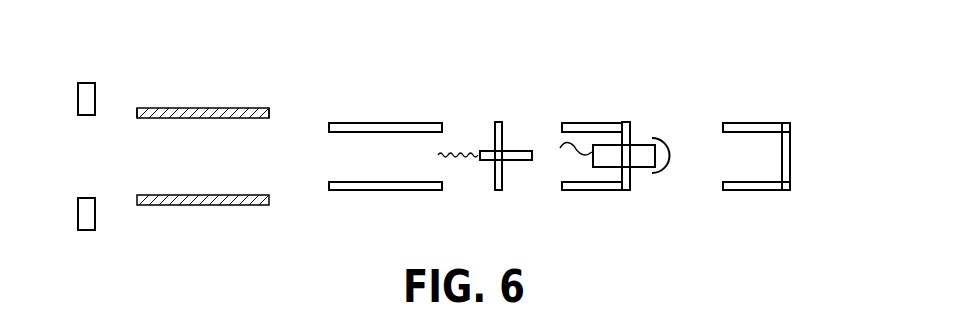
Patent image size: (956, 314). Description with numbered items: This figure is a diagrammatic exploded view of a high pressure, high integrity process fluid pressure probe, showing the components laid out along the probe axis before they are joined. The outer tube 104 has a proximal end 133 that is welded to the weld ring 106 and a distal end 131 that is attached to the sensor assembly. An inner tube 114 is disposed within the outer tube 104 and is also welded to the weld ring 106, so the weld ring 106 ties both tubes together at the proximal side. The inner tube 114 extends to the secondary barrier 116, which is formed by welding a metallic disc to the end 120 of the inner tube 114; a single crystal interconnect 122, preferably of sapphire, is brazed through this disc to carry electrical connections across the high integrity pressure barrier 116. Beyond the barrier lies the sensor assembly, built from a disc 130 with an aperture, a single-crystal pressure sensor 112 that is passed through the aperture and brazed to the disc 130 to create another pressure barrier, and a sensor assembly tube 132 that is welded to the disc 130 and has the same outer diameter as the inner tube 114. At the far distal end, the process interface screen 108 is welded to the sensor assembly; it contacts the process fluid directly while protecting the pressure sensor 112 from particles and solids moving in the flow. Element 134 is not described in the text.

The outer tube 104 is at (203, 108).
The weld ring 106 is at (95, 97).
The process interface screen 108 is at (755, 122).
The single-crystal pressure sensor 112 is at (638, 168).
The inner tube 114 is at (379, 123).
The secondary barrier 116 is at (479, 182).
The end of inner tube 120 is at (490, 130).
The single crystal interconnect 122 is at (520, 160).
The disc 130 is at (631, 134).
The distal end of outer tube 131 is at (270, 110).
The sensor assembly tube 132 is at (577, 122).
The proximal end of outer tube 133 is at (138, 116).
The gate electrode bar 134 is at (621, 120).